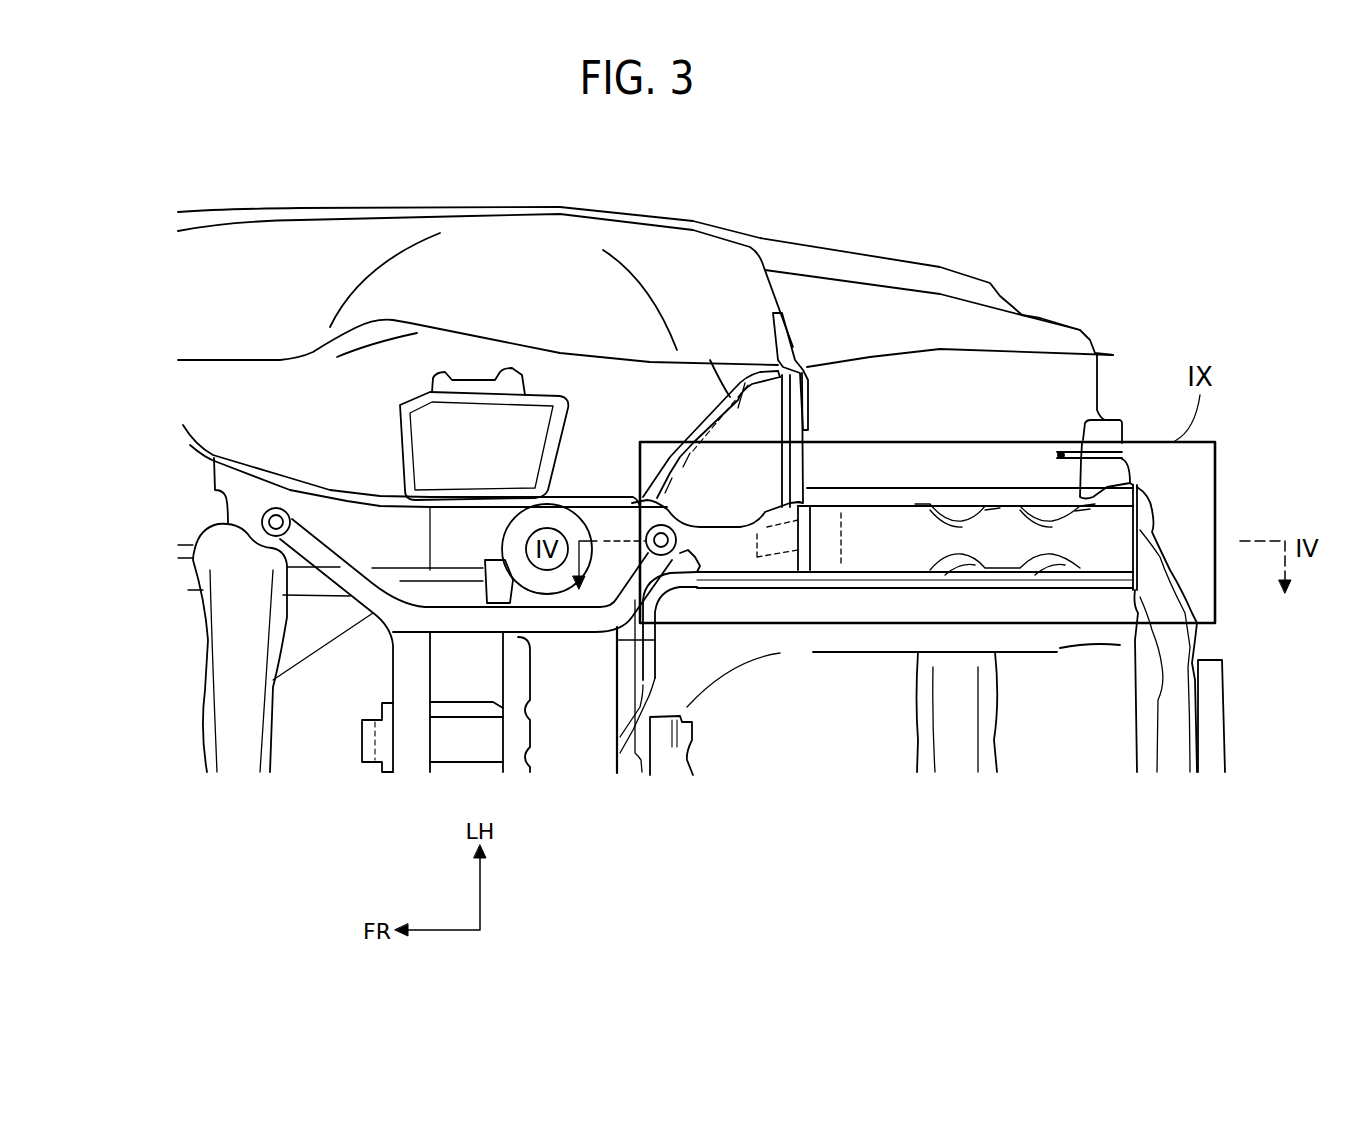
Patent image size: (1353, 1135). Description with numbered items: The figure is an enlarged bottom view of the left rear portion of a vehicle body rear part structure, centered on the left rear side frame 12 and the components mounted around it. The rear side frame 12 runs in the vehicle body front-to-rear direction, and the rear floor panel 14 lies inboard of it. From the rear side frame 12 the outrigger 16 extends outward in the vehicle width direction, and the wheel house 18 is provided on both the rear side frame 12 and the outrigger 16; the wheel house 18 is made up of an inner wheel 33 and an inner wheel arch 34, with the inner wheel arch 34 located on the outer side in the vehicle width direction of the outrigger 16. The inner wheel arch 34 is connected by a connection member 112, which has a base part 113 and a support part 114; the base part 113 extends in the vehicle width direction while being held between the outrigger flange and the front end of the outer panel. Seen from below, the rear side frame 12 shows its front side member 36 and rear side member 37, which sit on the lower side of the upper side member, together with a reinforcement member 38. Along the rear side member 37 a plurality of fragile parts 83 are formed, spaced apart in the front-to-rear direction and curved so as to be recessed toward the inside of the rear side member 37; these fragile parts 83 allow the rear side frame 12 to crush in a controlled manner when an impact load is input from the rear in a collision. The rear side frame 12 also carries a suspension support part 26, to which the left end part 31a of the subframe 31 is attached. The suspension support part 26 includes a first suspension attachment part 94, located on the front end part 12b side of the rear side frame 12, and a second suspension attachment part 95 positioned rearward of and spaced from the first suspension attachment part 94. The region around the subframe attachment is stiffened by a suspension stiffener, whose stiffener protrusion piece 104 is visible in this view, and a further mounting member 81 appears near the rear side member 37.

The rear side frame 12 is at (848, 474).
The front end part 12b is at (200, 498).
The rear floor panel 14 is at (1162, 596).
The outrigger 16 is at (740, 410).
The wheel house 18 is at (645, 243).
The suspension support part 26 is at (491, 407).
The subframe 31 is at (467, 683).
The left end part 31a is at (477, 572).
The inner wheel 33 is at (383, 151).
The inner wheel arch 34 is at (390, 235).
The front side member 36 is at (718, 553).
The rear side member 37 is at (882, 558).
The reinforcement member 38 is at (842, 537).
The mounting member 81 is at (793, 550).
The fragile parts 83 is at (1040, 515).
The first suspension attachment part 94 is at (283, 507).
The second suspension attachment part 95 is at (657, 524).
The stiffener protrusion piece 104 is at (758, 560).
The connection member 112 is at (860, 313).
The base part 113 is at (805, 397).
The support part 114 is at (787, 340).